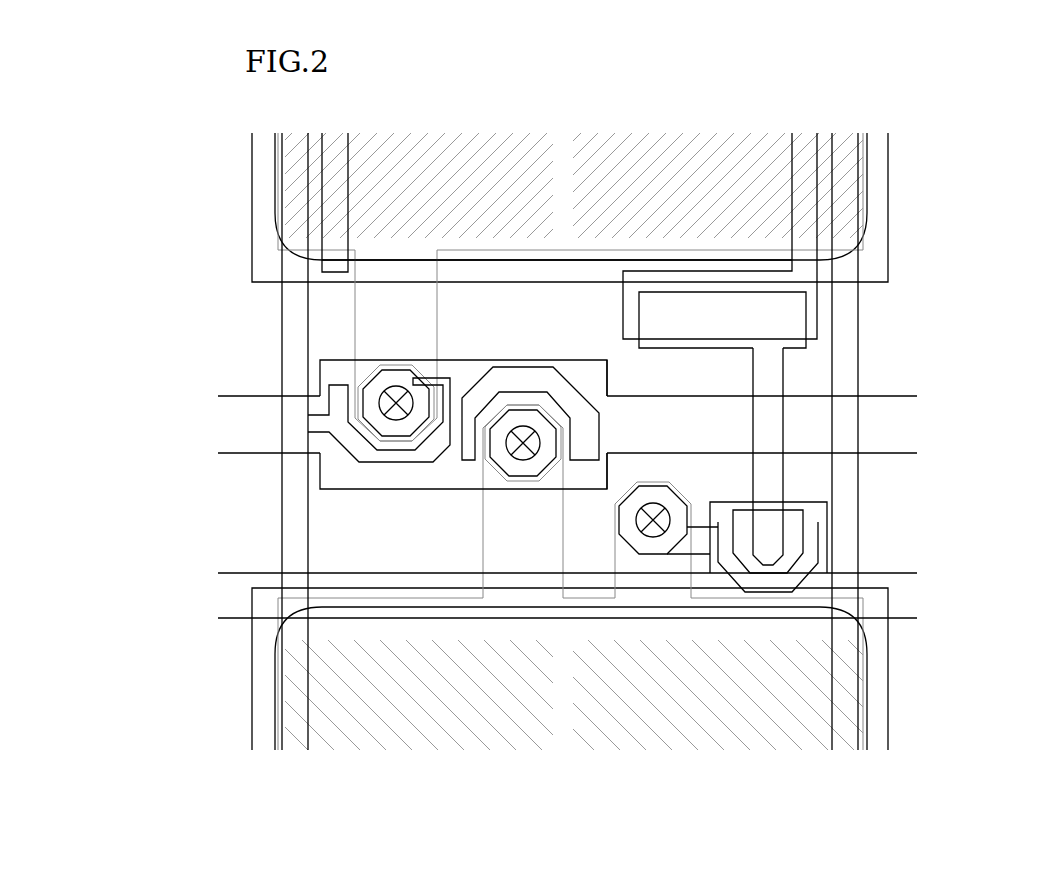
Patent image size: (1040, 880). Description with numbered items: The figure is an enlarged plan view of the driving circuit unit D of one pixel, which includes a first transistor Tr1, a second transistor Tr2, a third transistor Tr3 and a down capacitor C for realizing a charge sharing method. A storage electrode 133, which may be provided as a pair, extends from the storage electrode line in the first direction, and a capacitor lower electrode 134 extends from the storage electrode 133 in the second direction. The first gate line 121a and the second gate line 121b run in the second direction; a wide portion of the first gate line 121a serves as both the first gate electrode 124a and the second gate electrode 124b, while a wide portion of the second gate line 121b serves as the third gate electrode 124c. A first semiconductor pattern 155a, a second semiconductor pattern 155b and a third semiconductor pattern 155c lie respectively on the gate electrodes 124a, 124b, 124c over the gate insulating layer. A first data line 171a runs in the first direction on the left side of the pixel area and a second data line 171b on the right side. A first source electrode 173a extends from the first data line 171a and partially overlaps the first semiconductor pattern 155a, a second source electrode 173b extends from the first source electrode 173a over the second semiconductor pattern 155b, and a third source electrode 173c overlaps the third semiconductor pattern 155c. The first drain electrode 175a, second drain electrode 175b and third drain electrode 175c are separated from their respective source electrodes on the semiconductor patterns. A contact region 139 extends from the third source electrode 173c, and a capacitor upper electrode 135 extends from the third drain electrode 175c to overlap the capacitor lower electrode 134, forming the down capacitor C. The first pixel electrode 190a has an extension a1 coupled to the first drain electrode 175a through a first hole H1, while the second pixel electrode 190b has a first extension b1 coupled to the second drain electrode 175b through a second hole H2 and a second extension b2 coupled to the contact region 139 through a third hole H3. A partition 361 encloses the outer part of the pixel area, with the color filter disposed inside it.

The partition 361 is at (888, 193).
The first pixel electrode 190a is at (375, 250).
The second pixel electrode 190b is at (343, 630).
The first data line 171a is at (293, 302).
The second data line 171b is at (848, 300).
The storage electrode 133 is at (355, 262).
The capacitor lower electrode 134 is at (808, 327).
The capacitor upper electrode 135 is at (793, 305).
The down capacitor C is at (950, 312).
The first gate line 121a is at (900, 428).
The second gate line 121b is at (900, 607).
The extension a1 is at (355, 325).
The driving circuit unit D is at (155, 338).
The first transistor Tr1 is at (146, 478).
The second transistor Tr2 is at (450, 92).
The third transistor Tr3 is at (994, 470).
The first gate electrode 124a is at (330, 367).
The first semiconductor pattern 155a is at (327, 382).
The first drain electrode 175a is at (373, 408).
The first source electrode 173a is at (355, 465).
The second gate electrode 124b is at (590, 368).
The second semiconductor pattern 155b is at (545, 395).
The second drain electrode 175b is at (520, 418).
The second source electrode 173b is at (460, 380).
The third gate electrode 124c is at (830, 537).
The third semiconductor pattern 155c is at (800, 515).
The third drain electrode 175c is at (767, 540).
The third source electrode 173c is at (803, 573).
The contact region 139 is at (640, 548).
The first hole H1 is at (398, 406).
The second hole H2 is at (530, 455).
The third hole H3 is at (660, 538).
The first extension b1 is at (505, 558).
The second extension b2 is at (683, 565).